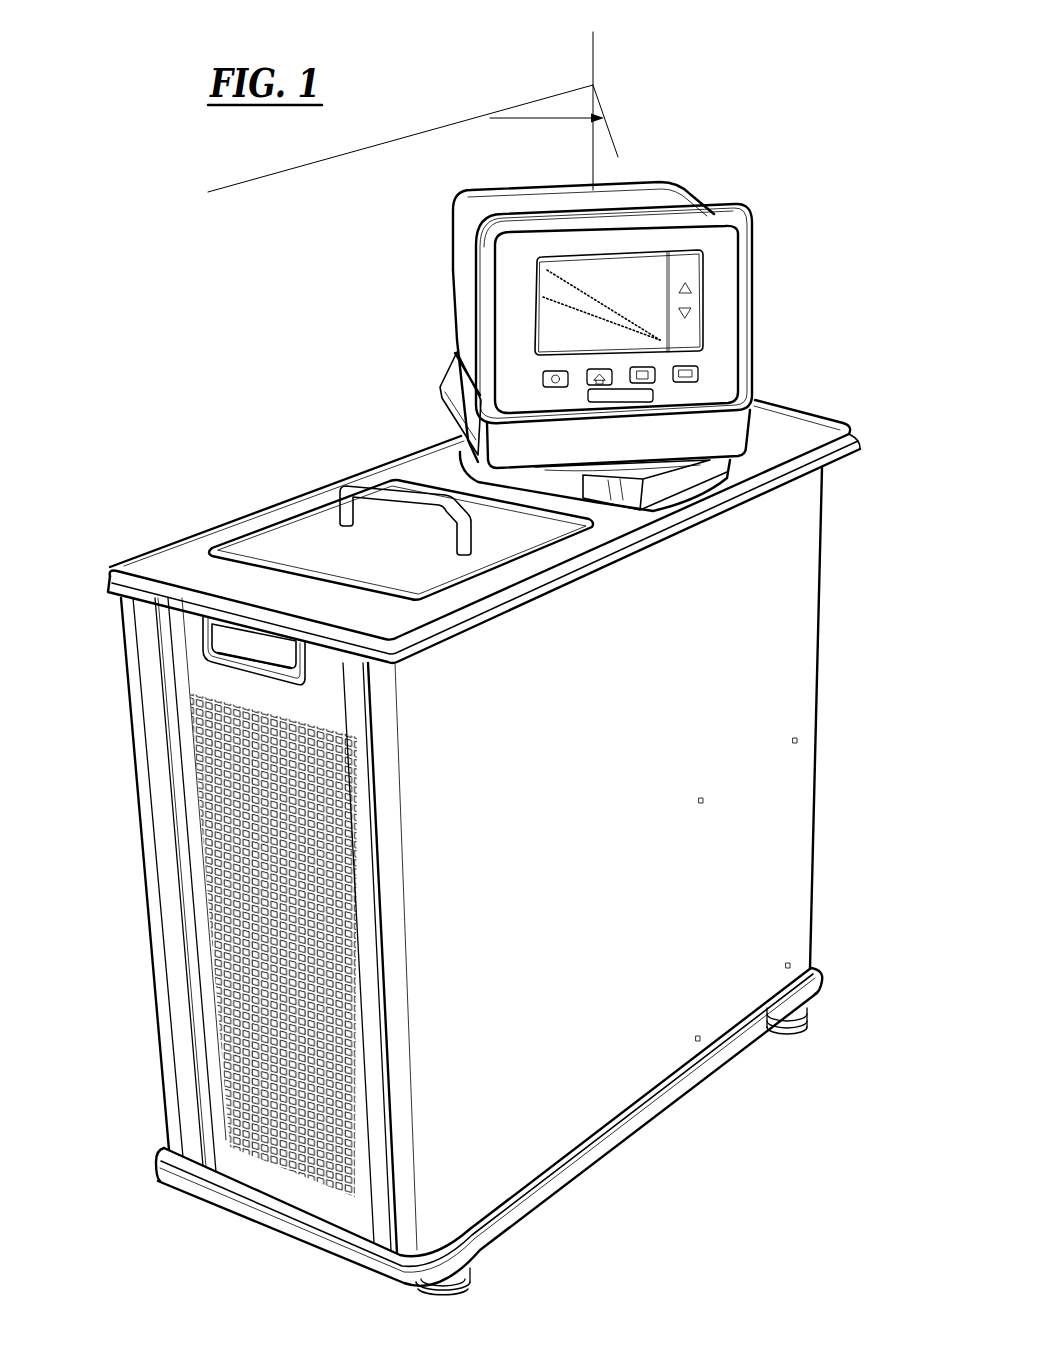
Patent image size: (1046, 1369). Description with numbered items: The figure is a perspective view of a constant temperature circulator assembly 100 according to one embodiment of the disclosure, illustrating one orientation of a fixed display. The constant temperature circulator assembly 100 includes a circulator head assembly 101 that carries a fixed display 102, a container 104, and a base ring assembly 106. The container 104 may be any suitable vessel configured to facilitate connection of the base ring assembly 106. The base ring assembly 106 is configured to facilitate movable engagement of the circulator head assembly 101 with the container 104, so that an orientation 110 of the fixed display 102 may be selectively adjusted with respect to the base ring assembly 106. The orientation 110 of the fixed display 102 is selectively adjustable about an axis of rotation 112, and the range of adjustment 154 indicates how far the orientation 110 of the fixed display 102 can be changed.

The constant temperature circulator assembly 100 is at (806, 337).
The circulator head assembly 101 is at (449, 345).
The fixed display 102 is at (717, 249).
The container 104 is at (826, 697).
The base ring assembly 106 is at (736, 478).
The orientation 110 is at (612, 140).
The axis of rotation 112 is at (592, 55).
The range of adjustment 154 is at (550, 118).